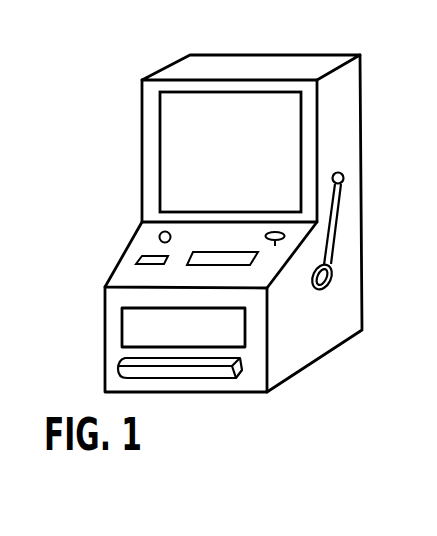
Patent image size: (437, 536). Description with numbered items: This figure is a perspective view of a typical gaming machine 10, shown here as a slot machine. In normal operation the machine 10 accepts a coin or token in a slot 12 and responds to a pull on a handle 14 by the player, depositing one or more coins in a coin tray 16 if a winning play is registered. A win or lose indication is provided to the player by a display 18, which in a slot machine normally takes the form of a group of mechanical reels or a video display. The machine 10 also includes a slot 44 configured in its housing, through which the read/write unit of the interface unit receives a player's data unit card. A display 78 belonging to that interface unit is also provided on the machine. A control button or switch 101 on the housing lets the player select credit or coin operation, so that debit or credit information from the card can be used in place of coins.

The gaming machine 10 is at (362, 118).
The slot 12 is at (275, 246).
The handle 14 is at (348, 208).
The coin tray 16 is at (208, 372).
The display 18 is at (168, 132).
The slot 44 is at (140, 260).
The display 78 is at (187, 258).
The control button or switch 101 is at (159, 236).